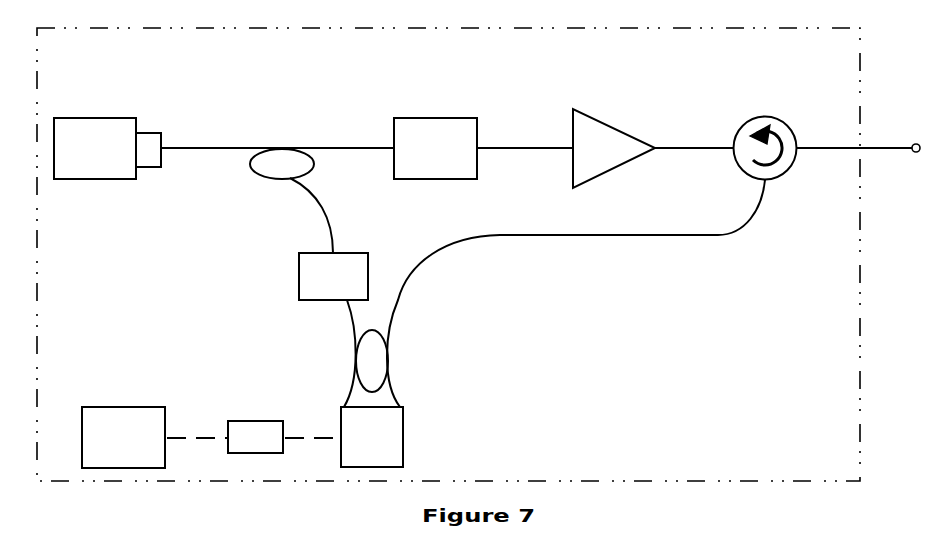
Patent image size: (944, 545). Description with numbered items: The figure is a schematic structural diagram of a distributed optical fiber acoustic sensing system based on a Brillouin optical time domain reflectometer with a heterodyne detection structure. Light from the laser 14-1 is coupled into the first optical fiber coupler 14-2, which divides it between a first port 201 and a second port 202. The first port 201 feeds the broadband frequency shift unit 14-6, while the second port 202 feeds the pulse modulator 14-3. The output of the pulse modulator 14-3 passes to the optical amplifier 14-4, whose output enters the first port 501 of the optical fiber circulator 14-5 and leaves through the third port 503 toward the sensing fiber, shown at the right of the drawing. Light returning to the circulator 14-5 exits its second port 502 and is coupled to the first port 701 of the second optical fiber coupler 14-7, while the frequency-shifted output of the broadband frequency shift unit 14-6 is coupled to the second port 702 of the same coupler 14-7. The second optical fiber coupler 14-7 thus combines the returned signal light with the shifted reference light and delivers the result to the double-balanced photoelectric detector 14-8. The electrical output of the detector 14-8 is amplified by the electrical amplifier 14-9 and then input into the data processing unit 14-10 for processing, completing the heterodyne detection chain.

The laser 14-1 is at (75, 118).
The first optical fiber coupler 14-2 is at (273, 144).
The pulse modulator 14-3 is at (413, 118).
The optical amplifier 14-4 is at (597, 112).
The optical fiber circulator 14-5 is at (753, 117).
The broadband frequency shift unit 14-6 is at (307, 253).
The second optical fiber coupler 14-7 is at (400, 350).
The double-balanced photoelectric detector 14-8 is at (403, 427).
The electrical amplifier 14-9 is at (250, 421).
The data processing unit 14-10 is at (97, 407).
The first port 201 is at (324, 215).
The second port 202 is at (354, 134).
The first port 501 is at (694, 134).
The second port 502 is at (751, 207).
The third port 503 is at (858, 136).
The first port 701 is at (543, 321).
The second port 702 is at (329, 353).